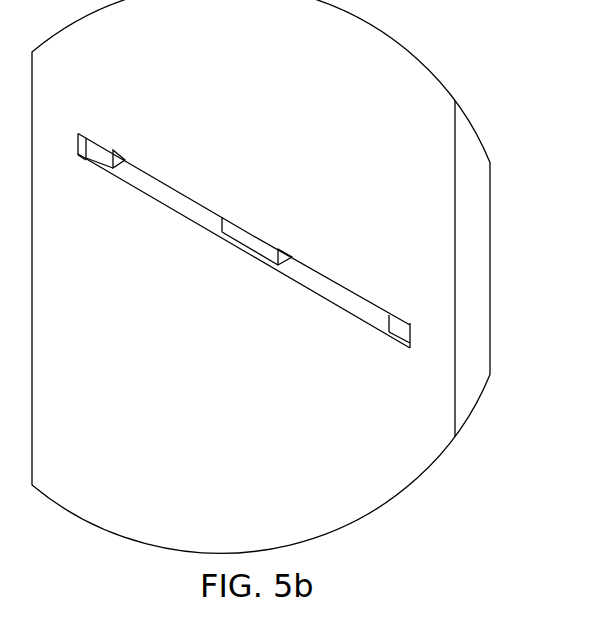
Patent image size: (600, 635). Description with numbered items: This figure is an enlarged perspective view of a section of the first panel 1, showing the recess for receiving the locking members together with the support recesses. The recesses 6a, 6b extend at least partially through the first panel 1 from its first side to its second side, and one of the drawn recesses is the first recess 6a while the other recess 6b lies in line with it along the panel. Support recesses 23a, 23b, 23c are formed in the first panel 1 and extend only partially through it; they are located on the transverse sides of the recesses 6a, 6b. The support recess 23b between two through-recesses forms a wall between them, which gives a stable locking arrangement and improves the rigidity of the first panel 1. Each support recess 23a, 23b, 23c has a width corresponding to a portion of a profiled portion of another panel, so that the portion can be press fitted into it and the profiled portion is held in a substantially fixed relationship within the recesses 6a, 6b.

The first panel 1 is at (477, 218).
The first recess 6a is at (313, 282).
The recess 6b is at (148, 190).
The support recess 23a is at (97, 150).
The support recess 23b is at (245, 233).
The support recess 23c is at (397, 317).